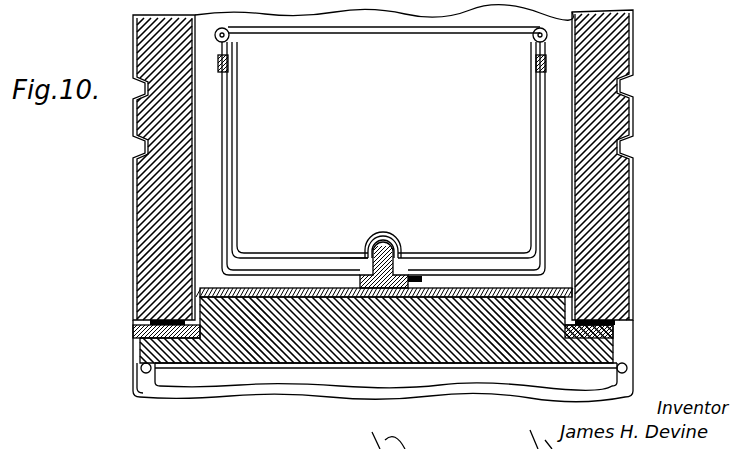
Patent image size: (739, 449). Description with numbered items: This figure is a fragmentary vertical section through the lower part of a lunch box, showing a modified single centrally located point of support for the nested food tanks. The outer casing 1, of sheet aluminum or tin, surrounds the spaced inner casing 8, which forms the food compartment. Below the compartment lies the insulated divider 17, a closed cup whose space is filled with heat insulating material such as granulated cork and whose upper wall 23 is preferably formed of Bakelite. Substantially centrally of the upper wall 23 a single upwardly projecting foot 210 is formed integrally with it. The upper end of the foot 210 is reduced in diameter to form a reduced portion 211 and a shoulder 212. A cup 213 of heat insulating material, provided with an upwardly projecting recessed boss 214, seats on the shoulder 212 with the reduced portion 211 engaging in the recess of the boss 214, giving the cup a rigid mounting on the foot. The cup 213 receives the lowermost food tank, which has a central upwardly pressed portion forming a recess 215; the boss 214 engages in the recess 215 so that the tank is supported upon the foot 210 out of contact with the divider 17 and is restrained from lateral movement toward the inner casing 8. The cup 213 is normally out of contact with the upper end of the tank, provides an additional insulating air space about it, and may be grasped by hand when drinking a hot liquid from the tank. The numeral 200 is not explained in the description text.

The outer casing 1 is at (133, 121).
The inner casing 8 is at (175, 168).
The insulated divider 17 is at (211, 374).
The upper wall 23 is at (268, 288).
The breaker strip 200 is at (384, 10).
The foot 210 is at (424, 270).
The reduced portion 211 is at (377, 242).
The shoulder 212 is at (406, 265).
The cup 213 is at (237, 143).
The boss 214 is at (391, 240).
The recess 215 is at (353, 257).